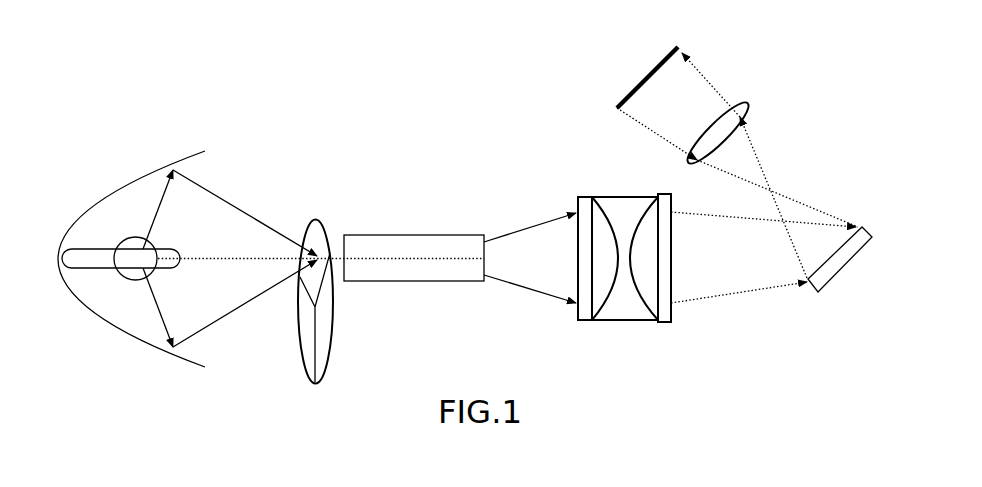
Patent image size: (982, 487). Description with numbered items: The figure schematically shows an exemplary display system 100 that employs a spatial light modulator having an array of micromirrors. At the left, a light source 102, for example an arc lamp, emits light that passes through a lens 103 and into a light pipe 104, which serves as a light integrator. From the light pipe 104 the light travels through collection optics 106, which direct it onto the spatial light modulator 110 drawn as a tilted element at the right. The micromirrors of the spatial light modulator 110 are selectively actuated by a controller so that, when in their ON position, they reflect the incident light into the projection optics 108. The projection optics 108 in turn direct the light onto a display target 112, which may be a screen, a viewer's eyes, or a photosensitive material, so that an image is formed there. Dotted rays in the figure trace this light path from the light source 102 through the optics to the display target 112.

The illumination system 100 is at (383, 138).
The light source 102 is at (145, 175).
The lens 103 is at (333, 343).
The light pipe 104 is at (383, 235).
The collection optics 106 is at (622, 197).
The projection optics 108 is at (740, 103).
The spatial light modulator 110 is at (847, 263).
The display target 112 is at (657, 64).